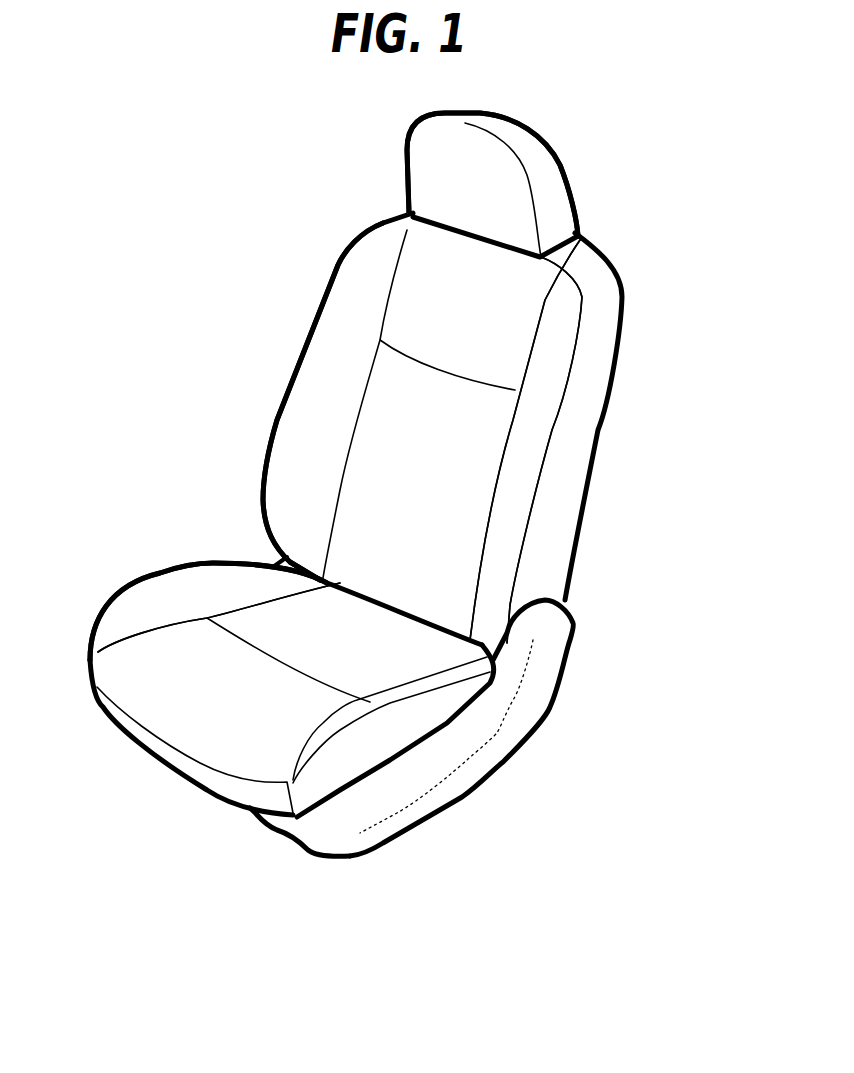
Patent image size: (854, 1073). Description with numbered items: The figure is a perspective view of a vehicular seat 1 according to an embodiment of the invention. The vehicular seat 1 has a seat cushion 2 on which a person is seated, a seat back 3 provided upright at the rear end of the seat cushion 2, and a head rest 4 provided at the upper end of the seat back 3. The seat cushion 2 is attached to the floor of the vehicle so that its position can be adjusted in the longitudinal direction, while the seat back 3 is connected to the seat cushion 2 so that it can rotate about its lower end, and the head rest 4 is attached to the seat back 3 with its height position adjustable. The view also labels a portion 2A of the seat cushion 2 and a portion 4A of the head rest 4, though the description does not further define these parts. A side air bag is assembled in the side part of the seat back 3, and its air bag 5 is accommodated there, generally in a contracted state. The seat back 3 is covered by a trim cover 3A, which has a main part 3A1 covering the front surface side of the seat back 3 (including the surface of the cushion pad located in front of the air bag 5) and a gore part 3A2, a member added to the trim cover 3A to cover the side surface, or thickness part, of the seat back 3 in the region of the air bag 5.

The vehicular seat 1 is at (640, 257).
The seat cushion 2 is at (367, 709).
The seat cushion side portion 2A is at (399, 657).
The seat back 3 is at (496, 433).
The trim cover 3A is at (544, 450).
The main part 3A1 is at (510, 507).
The gore part 3A2 is at (553, 540).
The head rest 4 is at (535, 185).
The headrest side portion 4A is at (552, 178).
The air bag 5 is at (172, 590).